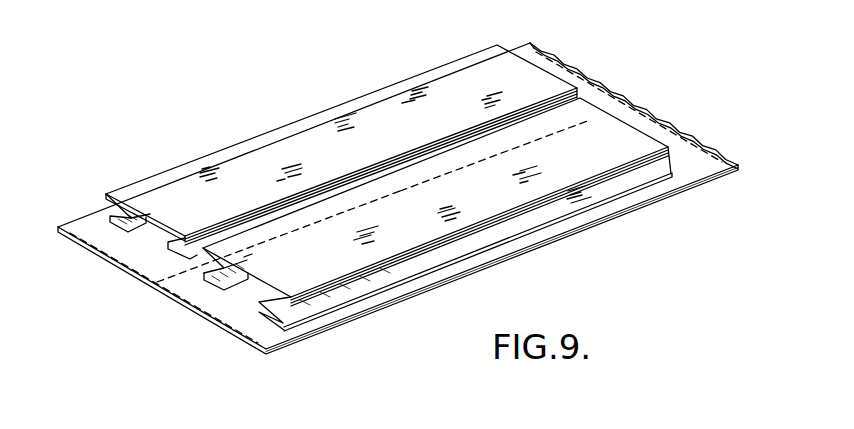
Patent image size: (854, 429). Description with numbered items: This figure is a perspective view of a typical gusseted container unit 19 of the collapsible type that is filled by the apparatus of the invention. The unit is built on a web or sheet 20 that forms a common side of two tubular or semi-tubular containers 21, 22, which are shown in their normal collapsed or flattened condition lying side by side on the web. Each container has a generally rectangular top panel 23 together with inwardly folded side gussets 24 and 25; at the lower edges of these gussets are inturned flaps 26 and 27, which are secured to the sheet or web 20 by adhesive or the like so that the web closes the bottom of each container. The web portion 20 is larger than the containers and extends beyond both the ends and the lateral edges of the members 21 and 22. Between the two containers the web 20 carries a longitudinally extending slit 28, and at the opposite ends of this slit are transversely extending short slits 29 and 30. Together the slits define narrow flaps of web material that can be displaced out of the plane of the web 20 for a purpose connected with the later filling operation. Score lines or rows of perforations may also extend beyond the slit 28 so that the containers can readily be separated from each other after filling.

The gusseted container unit 19 is at (344, 94).
The web or sheet 20 is at (587, 221).
The tubular container 21 is at (461, 52).
The tubular container 22 is at (383, 297).
The top panel 23 is at (641, 132).
The side gusset 24 is at (222, 272).
The side gusset 25 is at (323, 294).
The inturned flap 26 is at (225, 283).
The inturned flap 27 is at (265, 314).
The longitudinally extending slit 28 is at (426, 183).
The transversely extending short slit 29 is at (250, 256).
The transversely extending short slit 30 is at (588, 117).